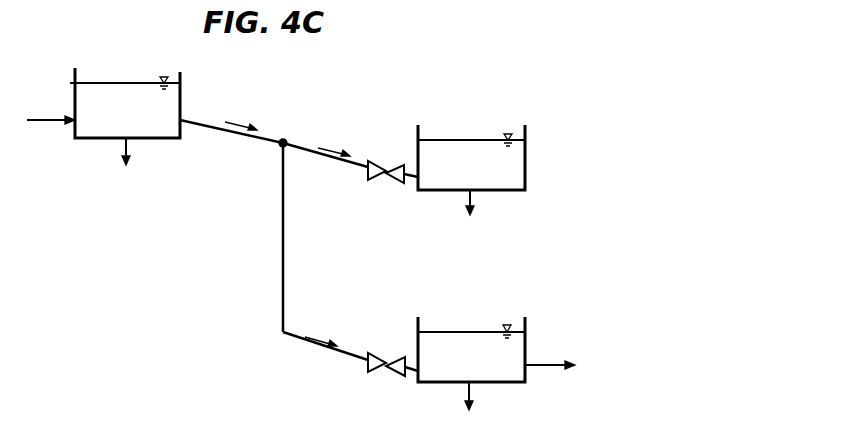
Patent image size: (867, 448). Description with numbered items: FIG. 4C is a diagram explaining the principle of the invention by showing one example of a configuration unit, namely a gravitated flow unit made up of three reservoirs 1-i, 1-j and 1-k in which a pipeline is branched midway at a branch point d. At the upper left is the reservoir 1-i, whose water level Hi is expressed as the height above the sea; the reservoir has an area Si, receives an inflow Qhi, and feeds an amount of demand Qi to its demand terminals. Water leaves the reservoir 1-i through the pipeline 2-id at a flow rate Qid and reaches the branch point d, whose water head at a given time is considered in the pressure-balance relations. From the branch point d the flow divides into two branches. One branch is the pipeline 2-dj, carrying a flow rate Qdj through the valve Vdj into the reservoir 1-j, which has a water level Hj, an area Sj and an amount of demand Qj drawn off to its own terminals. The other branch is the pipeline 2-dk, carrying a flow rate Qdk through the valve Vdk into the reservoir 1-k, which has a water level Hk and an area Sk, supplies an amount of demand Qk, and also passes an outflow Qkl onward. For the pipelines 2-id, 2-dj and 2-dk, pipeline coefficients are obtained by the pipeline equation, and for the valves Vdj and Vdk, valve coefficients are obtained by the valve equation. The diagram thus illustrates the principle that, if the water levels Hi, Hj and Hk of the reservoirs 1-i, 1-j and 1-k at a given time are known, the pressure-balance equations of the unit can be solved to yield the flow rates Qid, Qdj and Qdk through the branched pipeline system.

The reservoir 1-i is at (82, 138).
The water level of reservoir 1-i Hi is at (164, 70).
The inflow to reservoir i Qhi is at (48, 109).
The area of reservoir 1-i Si is at (92, 172).
The amount of demand from reservoir 1-i Qi is at (135, 160).
The pipeline 2-id is at (222, 131).
The flow rate in pipeline 2-id Qid is at (240, 117).
The branch point d is at (288, 130).
The pipeline 2-dj is at (320, 157).
The flow rate in pipeline 2-dj Qdj is at (337, 140).
The valve Vdj is at (393, 161).
The reservoir 1-j is at (525, 157).
The water level of reservoir 1-j Hj is at (508, 125).
The area of reservoir 1-j Sj is at (427, 208).
The amount of demand from reservoir 1-j Qj is at (481, 207).
The pipeline 2-dk is at (312, 348).
The flow rate in pipeline 2-dk Qdk is at (324, 330).
The valve Vdk is at (393, 352).
The reservoir 1-k is at (498, 383).
The water level of reservoir 1-k Hk is at (506, 320).
The outflow from reservoir k to l Qkl is at (550, 357).
The area of reservoir 1-k Sk is at (424, 409).
The amount of demand from reservoir 1-k Qk is at (481, 403).